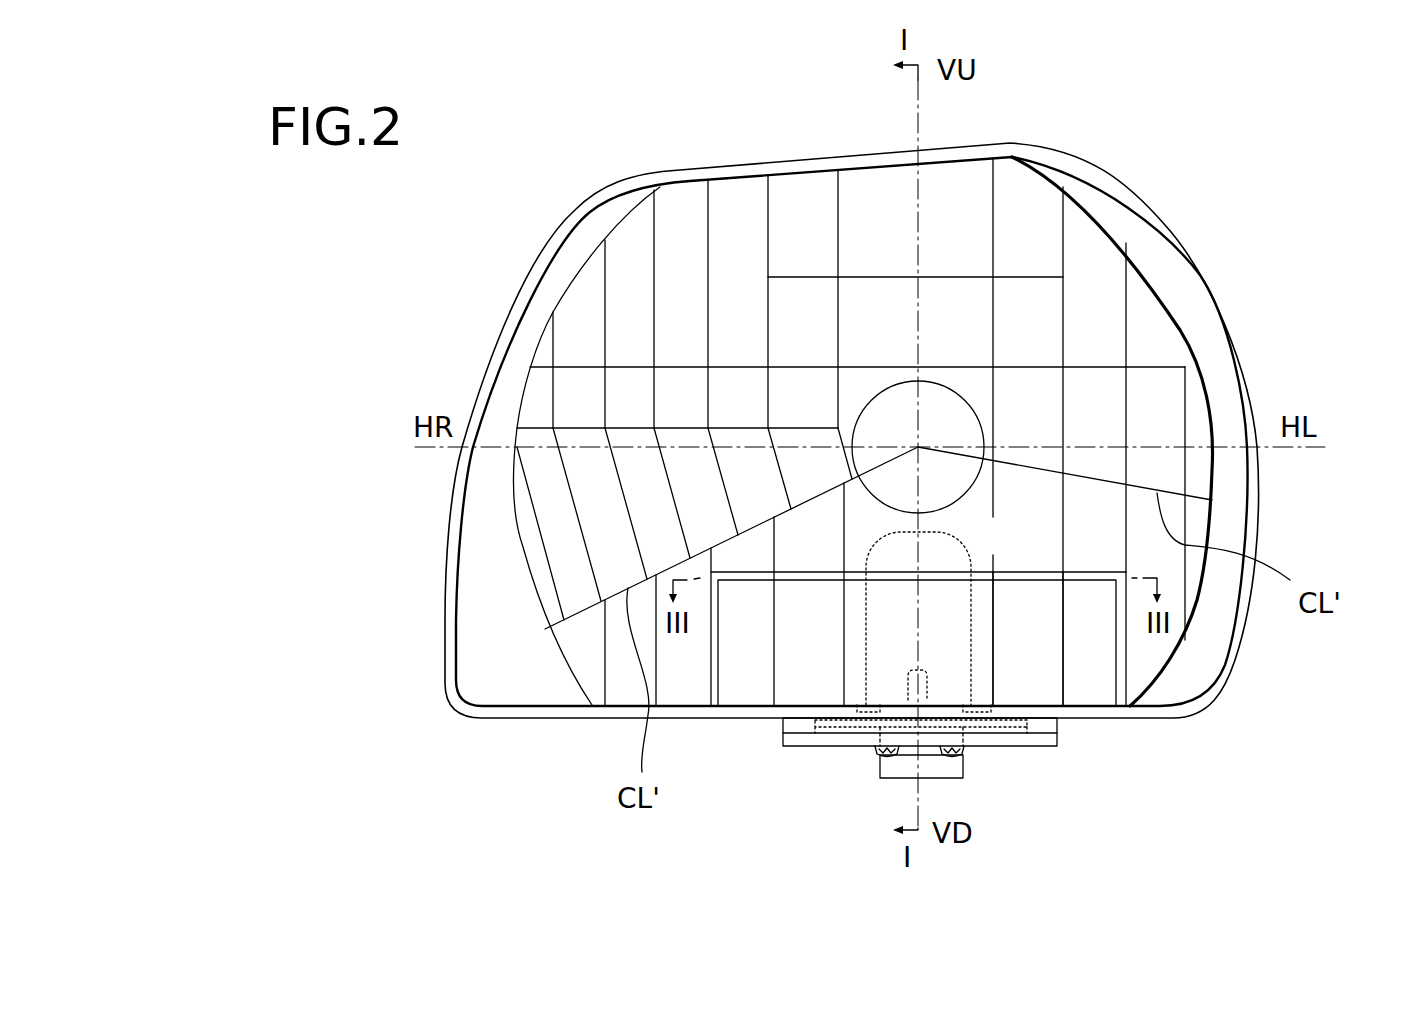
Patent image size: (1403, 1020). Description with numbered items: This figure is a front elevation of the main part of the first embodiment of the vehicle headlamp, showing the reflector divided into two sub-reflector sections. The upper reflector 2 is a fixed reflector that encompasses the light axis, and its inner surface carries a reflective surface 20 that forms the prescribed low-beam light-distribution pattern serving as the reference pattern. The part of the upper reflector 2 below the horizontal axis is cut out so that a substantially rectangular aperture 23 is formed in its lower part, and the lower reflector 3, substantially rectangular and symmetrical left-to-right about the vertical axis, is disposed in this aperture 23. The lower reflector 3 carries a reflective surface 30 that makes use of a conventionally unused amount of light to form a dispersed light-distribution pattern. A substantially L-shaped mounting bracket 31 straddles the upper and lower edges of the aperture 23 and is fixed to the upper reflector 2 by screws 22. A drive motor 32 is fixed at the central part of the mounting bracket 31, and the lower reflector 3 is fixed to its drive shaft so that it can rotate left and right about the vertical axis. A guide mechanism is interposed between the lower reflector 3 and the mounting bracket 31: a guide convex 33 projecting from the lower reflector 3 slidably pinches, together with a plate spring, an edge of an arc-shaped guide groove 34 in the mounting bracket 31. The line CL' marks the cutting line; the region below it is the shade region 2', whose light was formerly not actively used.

The upper reflector 2 is at (863, 393).
The shade region 2' is at (1182, 476).
The reflective surface 20 is at (1088, 237).
The screws 22 is at (893, 755).
The aperture 23 is at (1123, 660).
The lower reflector 3 is at (1042, 671).
The reflective surface 30 is at (752, 668).
The mounting bracket 31 is at (1048, 743).
The drive motor 32 is at (955, 777).
The guide convex 33 is at (968, 614).
The guide groove 34 is at (933, 700).